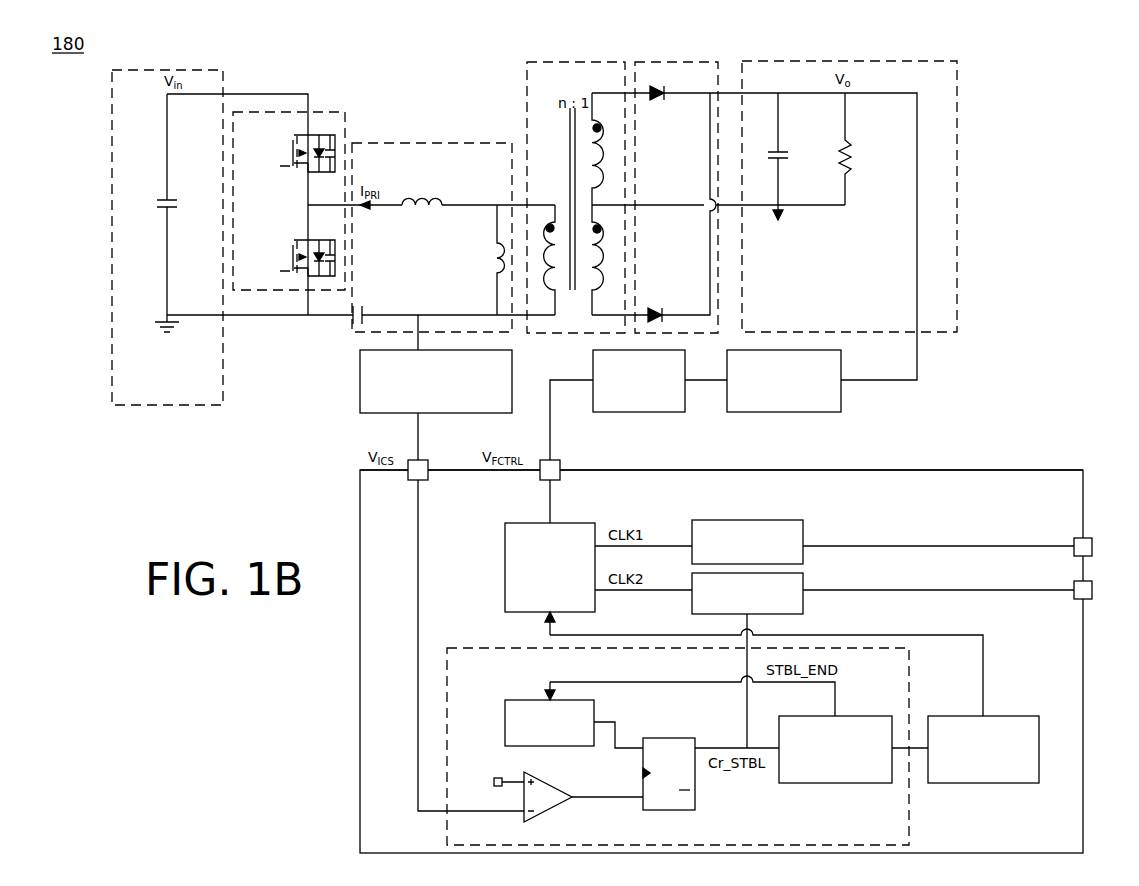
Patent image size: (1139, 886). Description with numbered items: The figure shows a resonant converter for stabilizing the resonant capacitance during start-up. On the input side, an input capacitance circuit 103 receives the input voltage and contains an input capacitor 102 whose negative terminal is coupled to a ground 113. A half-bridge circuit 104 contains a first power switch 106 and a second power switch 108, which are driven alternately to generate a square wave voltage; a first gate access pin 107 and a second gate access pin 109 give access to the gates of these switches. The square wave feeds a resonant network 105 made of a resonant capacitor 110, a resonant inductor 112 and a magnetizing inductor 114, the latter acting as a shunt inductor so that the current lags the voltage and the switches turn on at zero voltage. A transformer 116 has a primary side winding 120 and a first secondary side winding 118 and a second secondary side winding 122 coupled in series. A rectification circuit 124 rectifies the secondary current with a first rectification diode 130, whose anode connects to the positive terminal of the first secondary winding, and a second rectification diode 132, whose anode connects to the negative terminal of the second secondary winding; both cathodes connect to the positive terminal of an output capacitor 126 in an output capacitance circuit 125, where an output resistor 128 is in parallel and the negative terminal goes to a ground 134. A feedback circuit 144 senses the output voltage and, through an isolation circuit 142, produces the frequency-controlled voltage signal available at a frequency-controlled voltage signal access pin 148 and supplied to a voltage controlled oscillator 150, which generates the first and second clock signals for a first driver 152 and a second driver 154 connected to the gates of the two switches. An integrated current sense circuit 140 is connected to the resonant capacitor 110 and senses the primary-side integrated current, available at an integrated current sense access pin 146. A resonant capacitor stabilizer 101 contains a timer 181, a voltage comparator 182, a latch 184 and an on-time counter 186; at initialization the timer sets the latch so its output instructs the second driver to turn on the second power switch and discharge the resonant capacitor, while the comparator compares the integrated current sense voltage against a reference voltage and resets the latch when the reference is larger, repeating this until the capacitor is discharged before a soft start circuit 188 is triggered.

The resonant capacitor stabilizer 101 is at (447, 648).
The input capacitor 102 is at (166, 200).
The input capacitance circuit 103 is at (132, 70).
The bridge circuit 104 is at (318, 112).
The resonant network 105 is at (400, 143).
The first power switch 106 is at (300, 166).
The first gate access pin 107 is at (1086, 538).
The second power switch 108 is at (297, 250).
The second gate access pin 109 is at (1092, 596).
The resonant capacitor 110 is at (364, 314).
The resonant inductor 112 is at (440, 204).
The ground 113 is at (160, 324).
The magnetizing inductor 114 is at (496, 262).
The transformer 116 is at (527, 92).
The first secondary side winding 118 is at (596, 166).
The primary side winding 120 is at (554, 270).
The second secondary side winding 122 is at (596, 268).
The rectification circuit 124 is at (722, 62).
The output capacitance circuit 125 is at (957, 70).
The output capacitor 126 is at (781, 154).
The output resistor 128 is at (849, 154).
The first rectification diode 130 is at (656, 100).
The second rectification diode 132 is at (656, 310).
The ground 134 is at (782, 216).
The integrated current sense circuit 140 is at (436, 387).
The isolation circuit 142 is at (638, 405).
The feedback circuit 144 is at (784, 381).
The integrated current sense access pin 146 is at (426, 478).
The frequency-controlled voltage signal access pin 148 is at (557, 462).
The voltage controlled oscillator 150 is at (550, 579).
The first driver 152 is at (747, 542).
The second driver 154 is at (747, 593).
The timer 181 is at (574, 724).
The voltage comparator 182 is at (552, 810).
The latch 184 is at (686, 810).
The on-time counter 186 is at (853, 749).
The soft start circuit 188 is at (983, 749).